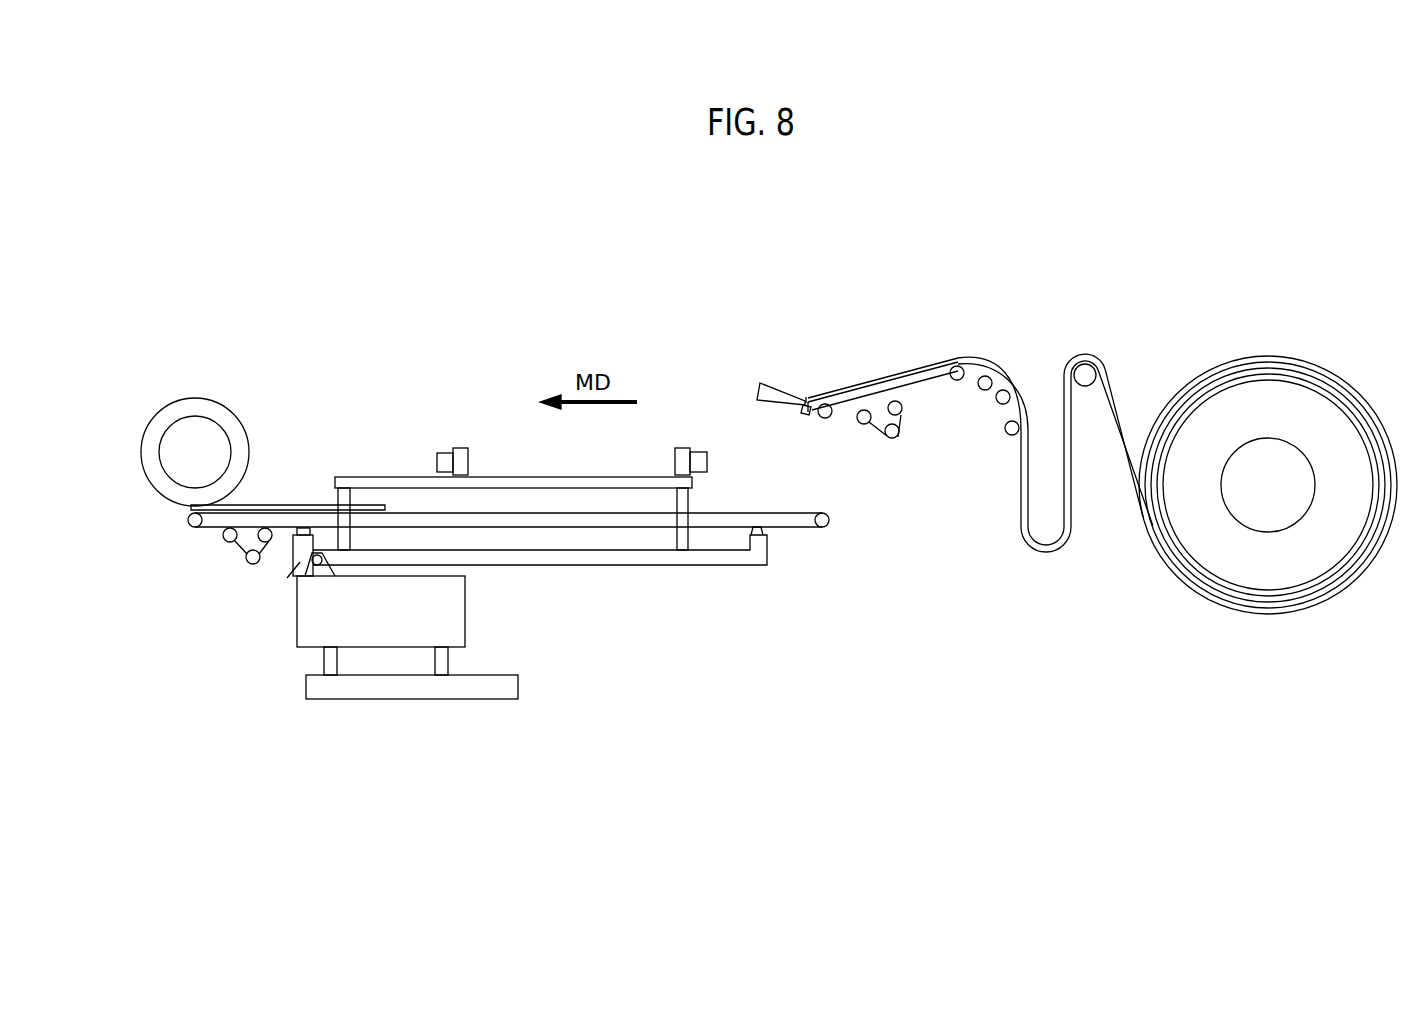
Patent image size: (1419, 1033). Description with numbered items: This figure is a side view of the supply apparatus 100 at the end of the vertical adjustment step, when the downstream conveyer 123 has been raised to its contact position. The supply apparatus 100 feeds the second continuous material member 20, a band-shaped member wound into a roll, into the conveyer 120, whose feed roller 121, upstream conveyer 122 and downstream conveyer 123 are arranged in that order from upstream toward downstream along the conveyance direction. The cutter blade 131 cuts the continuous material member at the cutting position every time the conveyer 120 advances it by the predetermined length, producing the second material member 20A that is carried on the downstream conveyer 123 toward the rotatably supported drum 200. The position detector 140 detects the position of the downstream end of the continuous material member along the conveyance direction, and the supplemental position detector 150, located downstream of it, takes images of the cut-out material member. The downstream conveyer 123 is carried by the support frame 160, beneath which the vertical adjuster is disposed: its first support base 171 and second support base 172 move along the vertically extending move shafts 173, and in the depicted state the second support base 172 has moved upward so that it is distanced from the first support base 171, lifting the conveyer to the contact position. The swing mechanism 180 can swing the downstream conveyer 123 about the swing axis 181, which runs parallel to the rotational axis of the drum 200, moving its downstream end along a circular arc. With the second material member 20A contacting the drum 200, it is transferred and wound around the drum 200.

The supply apparatus 100 is at (1003, 250).
The conveyer 120 is at (666, 464).
The feed roller 121 is at (1079, 356).
The upstream conveyer 122 is at (849, 433).
The downstream conveyer 123 is at (593, 538).
The second continuous material member 20 is at (863, 382).
The second material member 20A is at (318, 504).
The cutter blade 131 is at (773, 388).
The position detector 140 is at (683, 447).
The supplemental position detector 150 is at (468, 448).
The support frame 160 is at (733, 568).
The first support base 171 is at (435, 690).
The second support base 172 is at (453, 610).
The move shafts 173 is at (437, 660).
The swing mechanism 180 is at (288, 603).
The swing axis 181 is at (298, 566).
The drum 200 is at (203, 396).